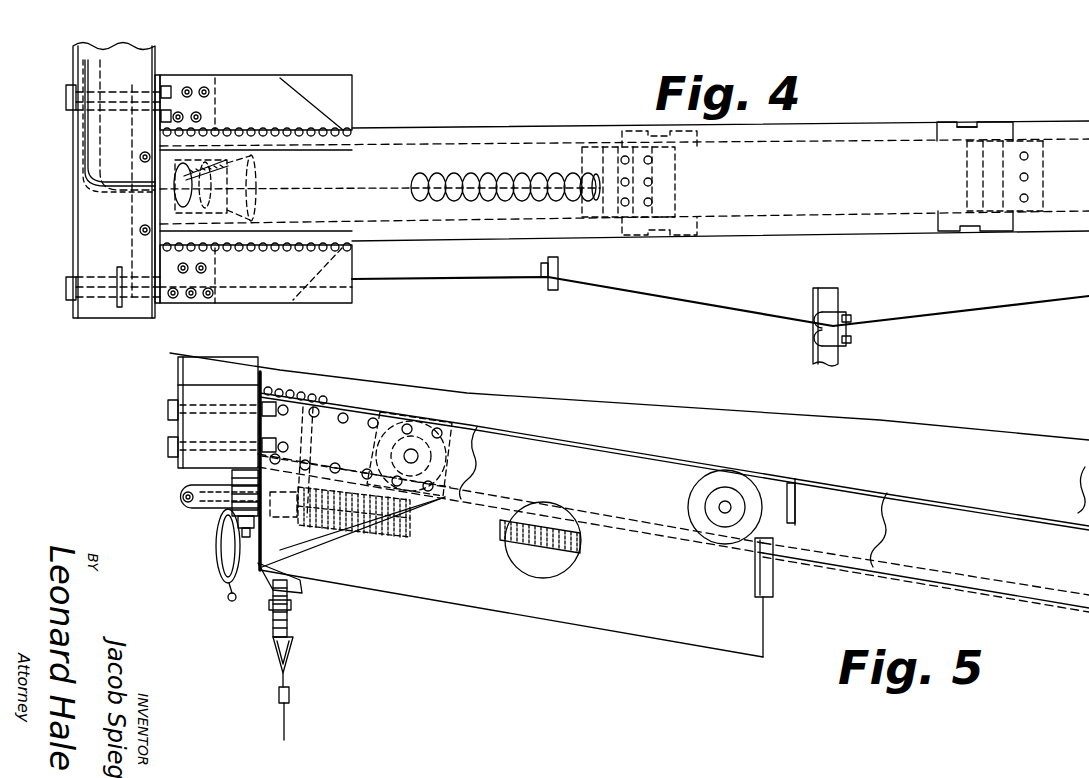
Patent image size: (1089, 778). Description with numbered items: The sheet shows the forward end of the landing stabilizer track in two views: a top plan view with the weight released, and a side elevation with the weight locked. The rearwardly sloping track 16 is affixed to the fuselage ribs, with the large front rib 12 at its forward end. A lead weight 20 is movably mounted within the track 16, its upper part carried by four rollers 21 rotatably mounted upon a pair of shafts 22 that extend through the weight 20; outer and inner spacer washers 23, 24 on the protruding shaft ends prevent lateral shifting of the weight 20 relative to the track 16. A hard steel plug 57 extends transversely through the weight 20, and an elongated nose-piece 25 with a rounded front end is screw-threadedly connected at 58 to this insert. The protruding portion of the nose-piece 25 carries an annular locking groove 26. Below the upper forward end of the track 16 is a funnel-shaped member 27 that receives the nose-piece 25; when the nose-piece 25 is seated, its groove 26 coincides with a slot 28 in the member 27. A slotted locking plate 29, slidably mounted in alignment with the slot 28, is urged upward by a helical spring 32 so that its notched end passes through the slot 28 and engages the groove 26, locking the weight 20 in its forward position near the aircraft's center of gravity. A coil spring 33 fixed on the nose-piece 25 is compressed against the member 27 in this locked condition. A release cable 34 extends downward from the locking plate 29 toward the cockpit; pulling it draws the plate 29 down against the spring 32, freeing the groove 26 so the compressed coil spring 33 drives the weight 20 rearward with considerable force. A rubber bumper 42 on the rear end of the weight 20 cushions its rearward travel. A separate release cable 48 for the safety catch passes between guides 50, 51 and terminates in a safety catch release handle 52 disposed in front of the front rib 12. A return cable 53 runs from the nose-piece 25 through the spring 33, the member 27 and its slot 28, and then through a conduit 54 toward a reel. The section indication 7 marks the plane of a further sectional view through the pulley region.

In FIG. 4, the front rib 12 is at (93, 307).
In FIG. 4, the track 16 is at (1059, 234).
In FIG. 5, the track 16 is at (1046, 573).
In FIG. 4, the weight 20 is at (858, 193).
In FIG. 5, the weight 20 is at (604, 617).
In FIG. 4, the rollers 21 is at (694, 228).
In FIG. 5, the shafts 22 is at (411, 453).
In FIG. 4, the outer spacer washers 23 is at (985, 126).
In FIG. 4, the inner spacer washers 24 is at (940, 125).
In FIG. 4, the nose-piece 25 is at (566, 170).
In FIG. 4, the annular locking groove 26 is at (550, 177).
In FIG. 4, the funnel-shaped member 27 is at (286, 137).
In FIG. 5, the funnel-shaped member 27 is at (354, 557).
In FIG. 4, the slot 28 is at (260, 127).
In FIG. 5, the slot 28 is at (354, 579).
In FIG. 5, the slotted locking plate 29 is at (287, 603).
In FIG. 5, the helical spring 32 is at (273, 607).
In FIG. 4, the coil spring 33 is at (447, 197).
In FIG. 5, the coil spring 33 is at (510, 545).
In FIG. 5, the release cable 34 is at (280, 718).
In FIG. 5, the bumper 42 is at (775, 578).
In FIG. 4, the release cable 48 is at (1040, 306).
In FIG. 4, the guide 50 is at (827, 342).
In FIG. 4, the guide 51 is at (560, 272).
In FIG. 4, the safety catch release handle 52 is at (120, 305).
In FIG. 5, the safety catch release handle 52 is at (228, 597).
In FIG. 4, the return cable 53 is at (286, 180).
In FIG. 4, the conduit 54 is at (87, 187).
In FIG. 5, the conduit 54 is at (203, 511).
In FIG. 5, the plug 57 is at (546, 578).
In FIG. 5, the screw-threaded connection 58 is at (532, 553).
In FIG. 5, the section line 7 is at (745, 568).